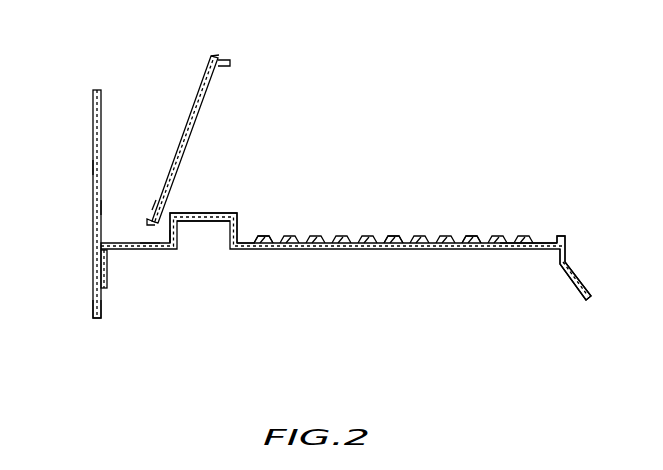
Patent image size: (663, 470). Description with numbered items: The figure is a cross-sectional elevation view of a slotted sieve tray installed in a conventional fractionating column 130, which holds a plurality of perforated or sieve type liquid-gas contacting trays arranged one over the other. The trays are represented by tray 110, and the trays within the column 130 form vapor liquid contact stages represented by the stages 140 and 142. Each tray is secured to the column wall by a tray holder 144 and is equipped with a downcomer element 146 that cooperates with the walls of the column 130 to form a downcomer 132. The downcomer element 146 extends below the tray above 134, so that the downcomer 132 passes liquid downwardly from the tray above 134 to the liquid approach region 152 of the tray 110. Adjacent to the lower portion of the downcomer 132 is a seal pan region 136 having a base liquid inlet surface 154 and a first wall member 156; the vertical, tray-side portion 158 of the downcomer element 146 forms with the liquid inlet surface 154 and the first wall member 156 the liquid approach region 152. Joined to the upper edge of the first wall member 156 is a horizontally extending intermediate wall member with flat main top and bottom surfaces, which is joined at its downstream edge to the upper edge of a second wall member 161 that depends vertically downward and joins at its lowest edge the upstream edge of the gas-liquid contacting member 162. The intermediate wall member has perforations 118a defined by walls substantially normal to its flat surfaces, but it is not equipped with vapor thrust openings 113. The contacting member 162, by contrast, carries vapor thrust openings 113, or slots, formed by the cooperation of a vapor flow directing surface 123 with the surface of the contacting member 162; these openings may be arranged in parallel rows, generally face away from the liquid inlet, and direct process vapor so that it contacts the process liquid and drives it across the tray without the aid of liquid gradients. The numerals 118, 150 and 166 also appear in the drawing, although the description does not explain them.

The tray 110 is at (538, 241).
The vapor thrust openings 113 is at (393, 248).
The corrugations 118 is at (323, 250).
The perforations 118a is at (193, 222).
The vapor flow directing surface 123 is at (453, 250).
The fractionating column 130 is at (95, 128).
The downcomer 132 is at (117, 167).
The tray above 134 is at (219, 61).
The seal pan region 136 is at (115, 207).
The vapor liquid contact stage 140 is at (112, 308).
The vapor liquid contact stage 142 is at (532, 182).
The tray holder 144 is at (102, 274).
The downcomer element 146 is at (203, 103).
The end lip 150 is at (562, 238).
The liquid approach region 152 is at (153, 224).
The liquid inlet surface 154 is at (150, 249).
The first wall member 156 is at (182, 249).
The tray-side portion of downcomer element 158 is at (158, 212).
The second wall member 161 is at (250, 243).
The gas-liquid contacting member 162 is at (255, 237).
The raised rib 166 is at (213, 213).